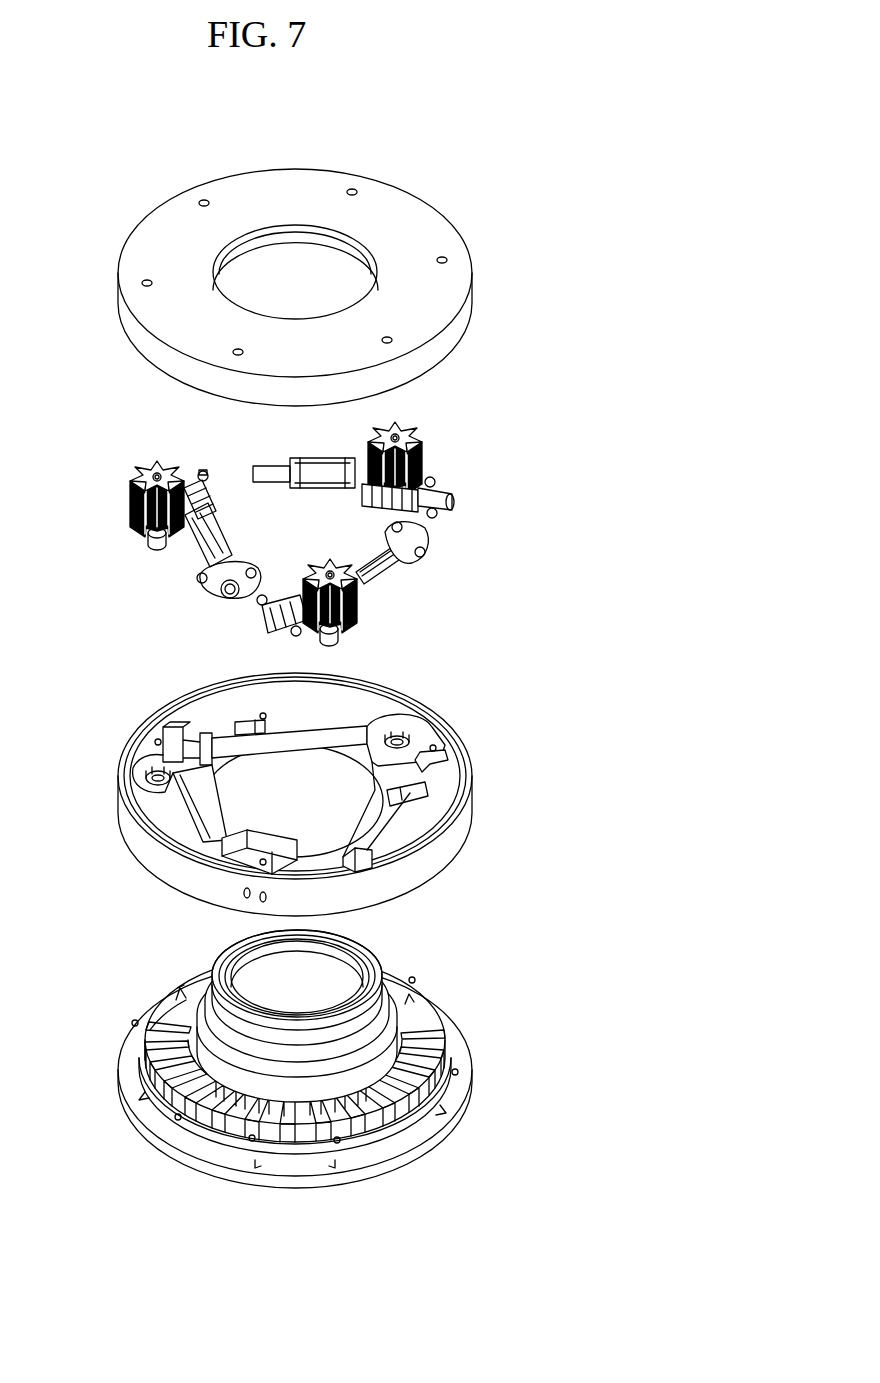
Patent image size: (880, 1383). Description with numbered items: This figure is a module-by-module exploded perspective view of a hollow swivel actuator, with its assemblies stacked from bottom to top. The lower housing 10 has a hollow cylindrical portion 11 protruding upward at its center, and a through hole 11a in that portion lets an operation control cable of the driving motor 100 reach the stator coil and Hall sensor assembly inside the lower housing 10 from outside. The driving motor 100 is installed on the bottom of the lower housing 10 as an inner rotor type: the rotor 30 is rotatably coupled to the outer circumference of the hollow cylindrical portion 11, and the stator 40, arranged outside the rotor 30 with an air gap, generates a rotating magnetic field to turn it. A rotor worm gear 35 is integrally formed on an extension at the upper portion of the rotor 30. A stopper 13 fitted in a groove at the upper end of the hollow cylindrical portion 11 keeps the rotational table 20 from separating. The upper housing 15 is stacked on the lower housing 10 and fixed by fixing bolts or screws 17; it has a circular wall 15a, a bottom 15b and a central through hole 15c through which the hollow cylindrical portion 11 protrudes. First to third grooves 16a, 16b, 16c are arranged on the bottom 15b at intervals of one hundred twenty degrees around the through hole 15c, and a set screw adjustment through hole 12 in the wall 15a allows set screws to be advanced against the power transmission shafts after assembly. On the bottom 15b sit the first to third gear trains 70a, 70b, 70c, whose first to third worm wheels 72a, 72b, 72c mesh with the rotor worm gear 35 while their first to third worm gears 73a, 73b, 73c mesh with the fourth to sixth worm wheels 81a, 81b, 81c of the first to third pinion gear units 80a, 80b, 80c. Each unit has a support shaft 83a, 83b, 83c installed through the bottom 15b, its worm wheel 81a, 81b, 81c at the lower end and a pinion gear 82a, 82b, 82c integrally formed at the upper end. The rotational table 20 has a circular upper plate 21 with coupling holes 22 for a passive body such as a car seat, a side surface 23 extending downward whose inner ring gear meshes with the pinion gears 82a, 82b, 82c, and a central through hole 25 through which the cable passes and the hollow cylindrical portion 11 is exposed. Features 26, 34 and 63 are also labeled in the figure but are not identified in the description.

The driving motor 100 is at (303, 1061).
The lower housing 10 is at (334, 1076).
The hollow cylindrical portion 11 is at (294, 1004).
The through hole 11a is at (240, 970).
The set screw adjustment through hole 12 is at (243, 890).
The stopper 13 is at (372, 967).
The upper housing 15 is at (305, 794).
The circular wall 15a is at (446, 785).
The bottom 15b is at (143, 764).
The through hole 15c is at (288, 809).
The first groove 16a is at (160, 738).
The second groove 16b is at (328, 862).
The third groove 16c is at (428, 752).
The fixing bolts or screws 17 is at (458, 1072).
The rotational table 20 is at (342, 259).
The circular upper plate 21 is at (460, 267).
The coupling holes 22 is at (204, 198).
The side surface 23 is at (460, 330).
The central through hole 25 is at (350, 297).
The opening rim 26 is at (285, 240).
The rotor 30 is at (283, 1086).
The stator outer ring 34 is at (143, 1063).
The rotor worm gear 35 is at (147, 1038).
The stator 40 is at (417, 1108).
The retaining tabs 63 is at (168, 998).
The first gear train 70a is at (172, 503).
The second gear train 70b is at (376, 604).
The third gear train 70c is at (390, 464).
The first worm wheel 72a is at (225, 547).
The second worm wheel 72b is at (387, 567).
The third worm wheel 72c is at (297, 462).
The first worm gear 73a is at (208, 495).
The second worm gear 73b is at (266, 628).
The third worm gear 73c is at (395, 510).
The first pinion gear unit 80a is at (108, 481).
The second pinion gear unit 80b is at (369, 622).
The third pinion gear unit 80c is at (451, 436).
The fourth worm wheel 81a is at (142, 523).
The fifth worm wheel 81b is at (357, 622).
The sixth worm wheel 81c is at (423, 465).
The first pinion gear 82a is at (150, 462).
The second pinion gear 82b is at (360, 590).
The third pinion gear 82c is at (425, 445).
The first support shaft 83a is at (152, 435).
The second support shaft 83b is at (322, 630).
The third support shaft 83c is at (392, 430).